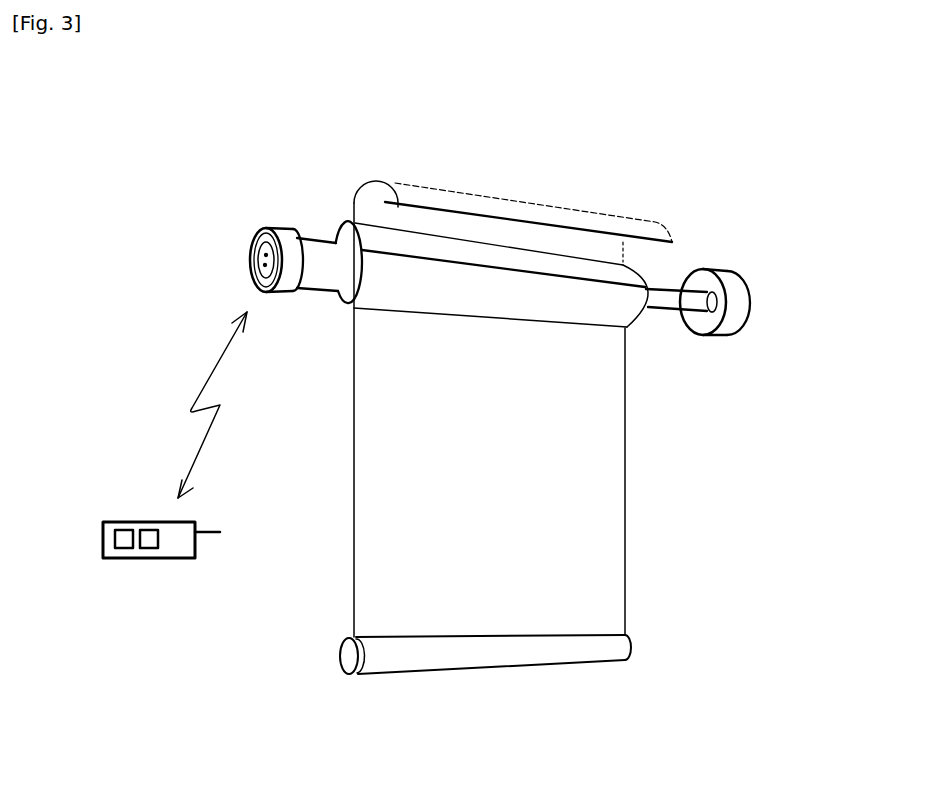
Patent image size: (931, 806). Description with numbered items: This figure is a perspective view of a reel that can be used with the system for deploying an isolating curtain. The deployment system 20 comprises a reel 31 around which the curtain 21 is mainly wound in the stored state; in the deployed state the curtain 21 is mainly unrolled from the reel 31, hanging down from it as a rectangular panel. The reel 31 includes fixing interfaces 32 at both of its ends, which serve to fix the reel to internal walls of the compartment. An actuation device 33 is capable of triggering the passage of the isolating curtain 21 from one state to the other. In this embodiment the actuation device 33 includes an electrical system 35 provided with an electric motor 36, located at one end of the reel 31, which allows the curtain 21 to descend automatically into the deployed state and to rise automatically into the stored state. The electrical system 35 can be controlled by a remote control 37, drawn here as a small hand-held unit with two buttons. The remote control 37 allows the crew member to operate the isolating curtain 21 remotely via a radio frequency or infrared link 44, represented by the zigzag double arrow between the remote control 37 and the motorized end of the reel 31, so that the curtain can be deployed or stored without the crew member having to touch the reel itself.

The deployment system 20 is at (665, 185).
The curtain 21 is at (565, 448).
The reel 31 is at (428, 286).
The fixing interfaces 32 is at (262, 258).
The actuation device 33 is at (140, 470).
The electrical system 35 is at (278, 218).
The electric motor 36 is at (262, 233).
The remote control 37 is at (168, 548).
The radio frequency or infrared link 44 is at (203, 387).